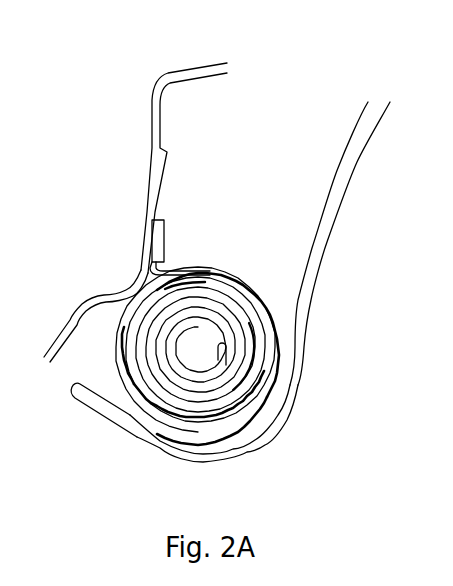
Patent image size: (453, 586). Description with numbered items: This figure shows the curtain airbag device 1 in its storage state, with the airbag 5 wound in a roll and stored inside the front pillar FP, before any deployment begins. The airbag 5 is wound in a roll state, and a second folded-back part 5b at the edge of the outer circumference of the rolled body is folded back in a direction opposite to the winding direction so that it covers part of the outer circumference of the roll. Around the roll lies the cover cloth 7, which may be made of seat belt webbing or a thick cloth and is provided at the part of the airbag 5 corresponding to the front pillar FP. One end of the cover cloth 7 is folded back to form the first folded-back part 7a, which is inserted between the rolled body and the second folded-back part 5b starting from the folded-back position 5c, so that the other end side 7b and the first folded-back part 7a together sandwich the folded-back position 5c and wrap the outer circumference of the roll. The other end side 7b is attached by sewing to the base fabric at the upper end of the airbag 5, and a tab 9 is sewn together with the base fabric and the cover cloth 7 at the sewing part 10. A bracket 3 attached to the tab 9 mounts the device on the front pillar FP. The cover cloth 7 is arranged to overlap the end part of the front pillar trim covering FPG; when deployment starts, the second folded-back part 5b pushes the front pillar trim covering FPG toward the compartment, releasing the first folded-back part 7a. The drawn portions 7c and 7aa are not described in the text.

The curtain airbag device 1 is at (356, 201).
The bracket 3 is at (158, 232).
The airbag 5 is at (138, 296).
The second folded-back part 5b is at (168, 428).
The folded-back position 5c is at (108, 385).
The cover cloth 7 is at (252, 288).
The first folded-back part 7a is at (205, 420).
The spring thickened portion 7aa is at (247, 312).
The other end side 7b is at (238, 440).
The spring left portion 7c is at (128, 324).
The tab 9 is at (164, 265).
The sewing part 10 is at (200, 283).
The front pillar FP is at (148, 204).
The front pillar trim covering FPG is at (340, 193).